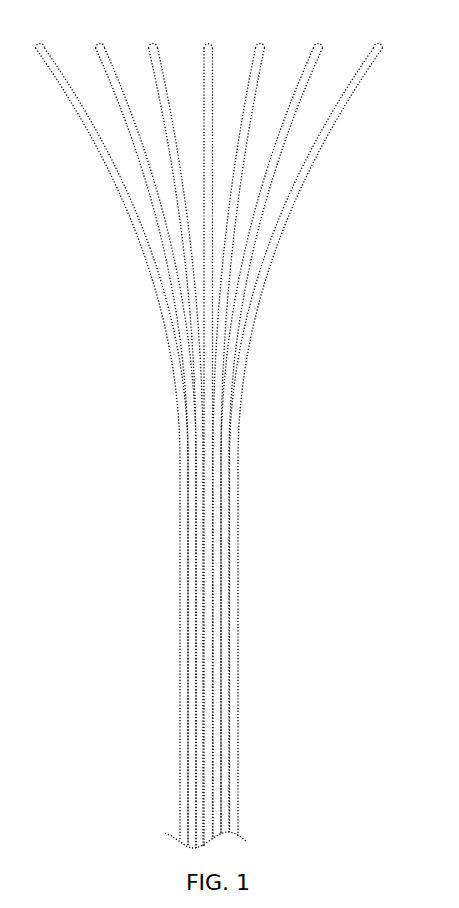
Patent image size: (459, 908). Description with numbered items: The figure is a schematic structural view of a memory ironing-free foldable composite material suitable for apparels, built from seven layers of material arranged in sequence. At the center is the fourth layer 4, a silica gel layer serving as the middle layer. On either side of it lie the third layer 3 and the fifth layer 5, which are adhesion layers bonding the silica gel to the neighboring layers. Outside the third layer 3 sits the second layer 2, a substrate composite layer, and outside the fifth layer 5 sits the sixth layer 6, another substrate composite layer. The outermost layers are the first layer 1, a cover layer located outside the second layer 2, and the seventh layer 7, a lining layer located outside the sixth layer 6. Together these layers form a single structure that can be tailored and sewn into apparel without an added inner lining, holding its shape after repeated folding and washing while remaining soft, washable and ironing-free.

The first layer 1 is at (47, 52).
The second layer 2 is at (105, 50).
The third layer 3 is at (159, 50).
The fourth layer 4 is at (212, 60).
The fifth layer 5 is at (266, 46).
The sixth layer 6 is at (322, 44).
The seventh layer 7 is at (378, 48).